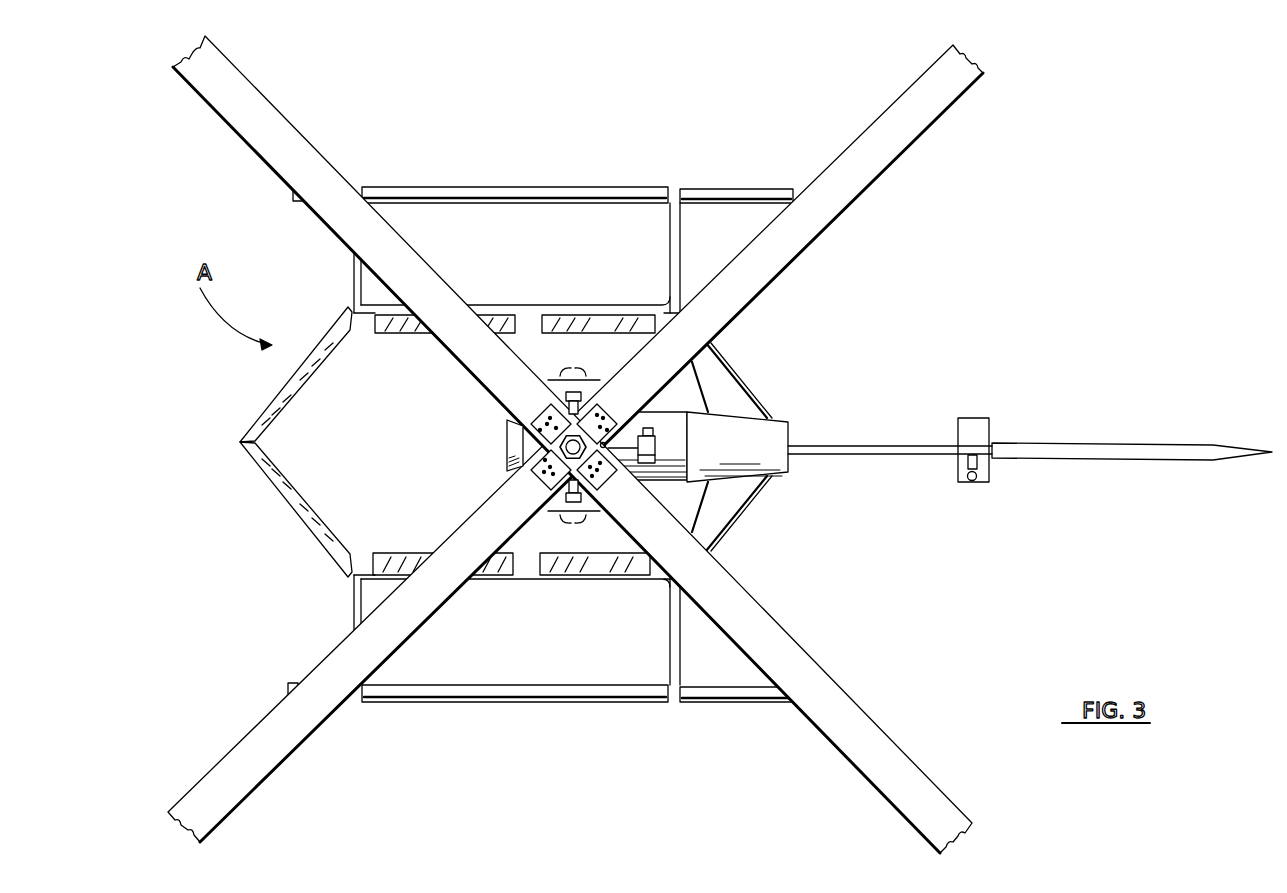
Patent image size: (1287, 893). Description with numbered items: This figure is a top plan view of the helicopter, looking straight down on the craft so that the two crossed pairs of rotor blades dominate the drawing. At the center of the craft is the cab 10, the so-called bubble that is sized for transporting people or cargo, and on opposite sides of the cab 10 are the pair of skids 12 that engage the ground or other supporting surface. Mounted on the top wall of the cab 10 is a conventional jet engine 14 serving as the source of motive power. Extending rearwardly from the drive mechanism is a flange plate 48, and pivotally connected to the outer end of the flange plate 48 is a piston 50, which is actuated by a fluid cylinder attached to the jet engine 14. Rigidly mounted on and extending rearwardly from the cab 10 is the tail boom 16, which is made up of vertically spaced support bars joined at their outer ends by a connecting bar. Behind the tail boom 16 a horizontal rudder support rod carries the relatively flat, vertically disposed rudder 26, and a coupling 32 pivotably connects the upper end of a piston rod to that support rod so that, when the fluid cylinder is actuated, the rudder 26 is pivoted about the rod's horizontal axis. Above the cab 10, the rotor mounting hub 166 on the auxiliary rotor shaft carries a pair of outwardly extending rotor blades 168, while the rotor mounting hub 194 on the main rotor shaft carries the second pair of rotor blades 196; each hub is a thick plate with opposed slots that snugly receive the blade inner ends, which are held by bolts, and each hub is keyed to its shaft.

The cab 10 is at (287, 490).
The skids 12 is at (507, 188).
The jet engine 14 is at (770, 440).
The tail boom 16 is at (886, 432).
The rudder 26 is at (1072, 443).
The coupling 32 is at (988, 468).
The flange plate 48 is at (628, 443).
The piston 50 is at (655, 452).
The rotor mounting hub 166 is at (598, 479).
The rotor blades 168 is at (785, 632).
The rotor mounting hub 194 is at (564, 414).
The rotor blades 196 is at (727, 305).